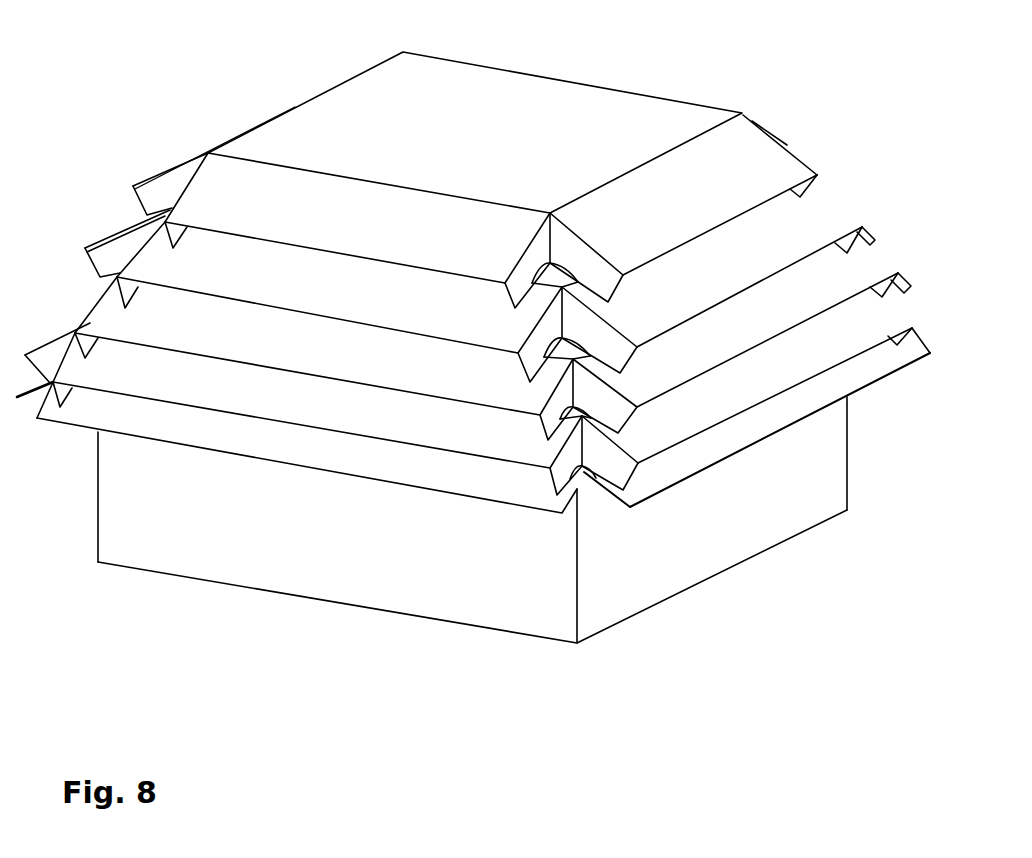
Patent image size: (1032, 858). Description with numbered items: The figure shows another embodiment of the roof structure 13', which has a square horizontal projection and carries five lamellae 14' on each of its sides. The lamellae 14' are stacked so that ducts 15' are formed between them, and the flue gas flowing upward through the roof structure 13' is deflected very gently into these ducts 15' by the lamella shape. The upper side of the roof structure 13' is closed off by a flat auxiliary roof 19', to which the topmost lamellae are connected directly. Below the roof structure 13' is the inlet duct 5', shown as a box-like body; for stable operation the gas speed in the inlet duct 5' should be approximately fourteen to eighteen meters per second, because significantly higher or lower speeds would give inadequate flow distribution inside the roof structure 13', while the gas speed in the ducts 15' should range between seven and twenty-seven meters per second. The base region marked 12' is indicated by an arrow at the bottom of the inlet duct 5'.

The roof structure 13' is at (483, 285).
The flat auxiliary roof 19' is at (437, 122).
The lamellae 14' is at (471, 328).
The ducts 15' is at (104, 314).
The inlet duct 5' is at (446, 520).
The bottom edge of base 12' is at (472, 602).